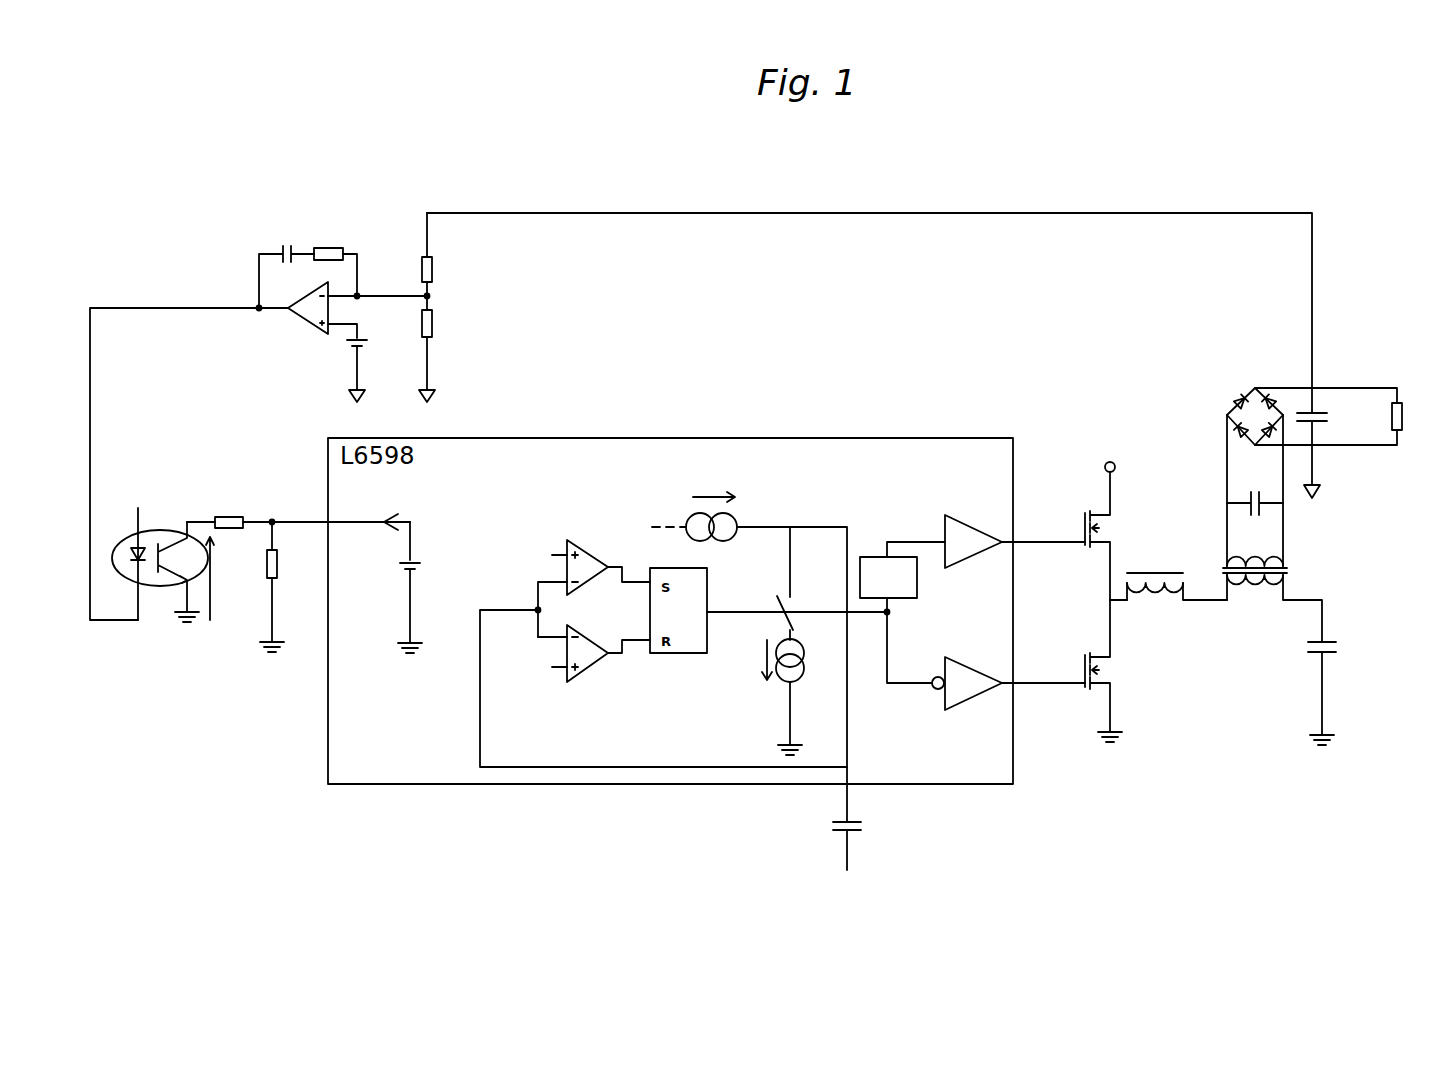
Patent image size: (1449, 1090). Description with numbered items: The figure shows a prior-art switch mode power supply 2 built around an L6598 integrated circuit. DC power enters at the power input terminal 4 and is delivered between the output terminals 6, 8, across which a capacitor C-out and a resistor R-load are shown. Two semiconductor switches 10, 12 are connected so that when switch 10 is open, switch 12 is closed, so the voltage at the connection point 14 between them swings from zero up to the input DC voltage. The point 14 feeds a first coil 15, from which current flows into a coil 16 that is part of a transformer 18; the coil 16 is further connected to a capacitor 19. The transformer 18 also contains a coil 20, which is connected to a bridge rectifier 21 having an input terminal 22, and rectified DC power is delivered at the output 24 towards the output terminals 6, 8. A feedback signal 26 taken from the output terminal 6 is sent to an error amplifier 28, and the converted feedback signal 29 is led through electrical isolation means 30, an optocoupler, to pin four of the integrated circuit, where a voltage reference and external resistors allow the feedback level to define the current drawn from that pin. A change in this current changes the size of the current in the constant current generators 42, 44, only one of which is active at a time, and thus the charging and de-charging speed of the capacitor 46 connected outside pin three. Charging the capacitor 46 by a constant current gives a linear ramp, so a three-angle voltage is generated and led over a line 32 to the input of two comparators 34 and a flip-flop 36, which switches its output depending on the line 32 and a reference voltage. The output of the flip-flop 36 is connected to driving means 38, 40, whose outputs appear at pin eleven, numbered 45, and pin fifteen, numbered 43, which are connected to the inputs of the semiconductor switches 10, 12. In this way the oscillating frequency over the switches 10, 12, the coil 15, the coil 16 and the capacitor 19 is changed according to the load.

The switch mode power supply 2 is at (1303, 181).
The power input terminal 4 is at (1118, 468).
The output terminal 6 is at (1340, 387).
The output terminal 8 is at (1358, 448).
The semiconductor switch 10 is at (1078, 508).
The semiconductor switch 12 is at (1080, 695).
The connection point 14 is at (1117, 603).
The first coil 15 is at (1160, 590).
The coil 16 is at (1215, 590).
The transformer 18 is at (1290, 569).
The capacitor 19 is at (1330, 655).
The coil 20 is at (1248, 556).
The bridge rectifier 21 is at (1234, 375).
The input terminal 22 is at (1282, 415).
The output 24 is at (1278, 382).
The feedback signal 26 is at (1009, 193).
The error amplifier 28 is at (391, 223).
The converted feedback signal 29 is at (181, 262).
The electrical isolation means 30 is at (176, 479).
The line 32 is at (478, 690).
The comparators 34 is at (590, 516).
The flip-flop 36 is at (862, 614).
The driving means 38 is at (955, 710).
The driving means 40 is at (968, 512).
The constant current generator 42 is at (745, 510).
The pin 15 43 is at (796, 628).
The constant current generator 44 is at (805, 683).
The pin 11 45 is at (1025, 672).
The capacitor 46 is at (830, 806).